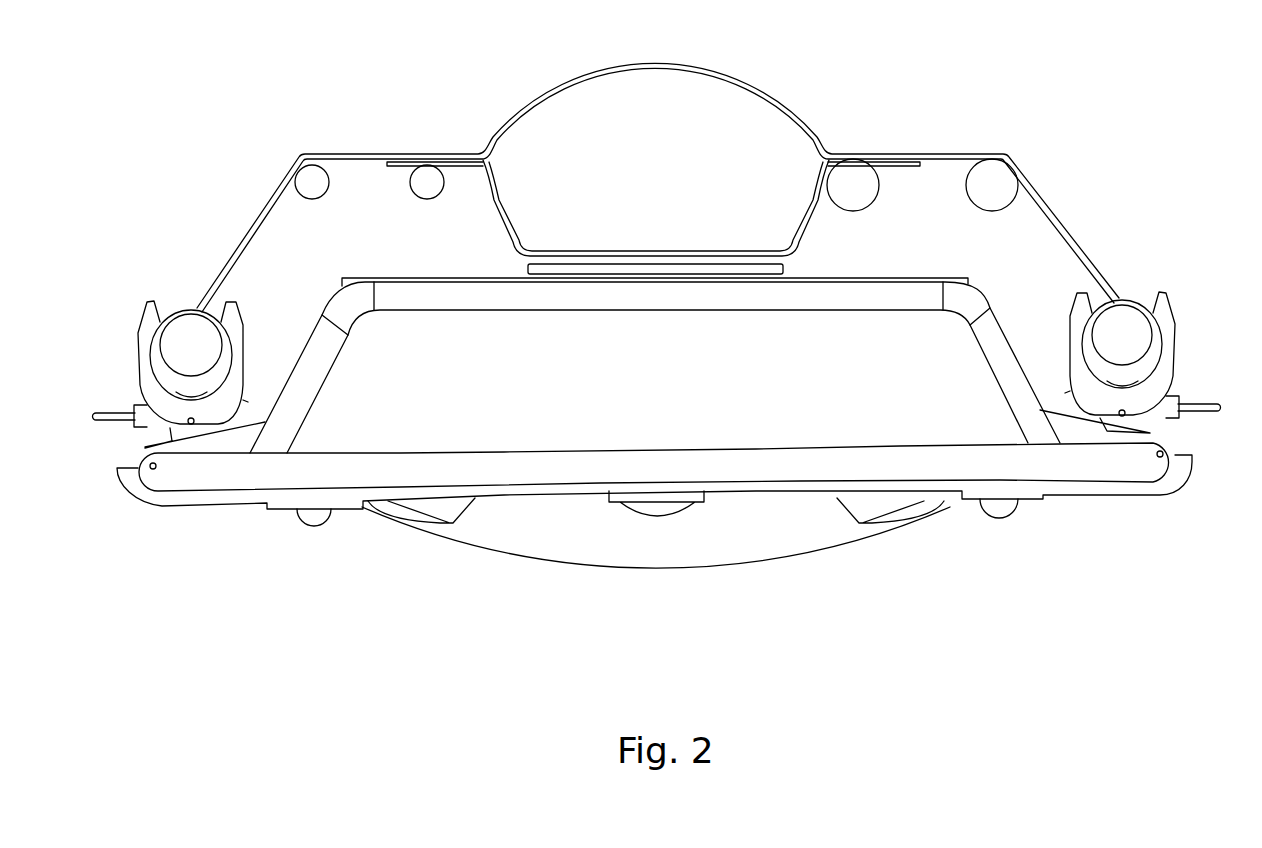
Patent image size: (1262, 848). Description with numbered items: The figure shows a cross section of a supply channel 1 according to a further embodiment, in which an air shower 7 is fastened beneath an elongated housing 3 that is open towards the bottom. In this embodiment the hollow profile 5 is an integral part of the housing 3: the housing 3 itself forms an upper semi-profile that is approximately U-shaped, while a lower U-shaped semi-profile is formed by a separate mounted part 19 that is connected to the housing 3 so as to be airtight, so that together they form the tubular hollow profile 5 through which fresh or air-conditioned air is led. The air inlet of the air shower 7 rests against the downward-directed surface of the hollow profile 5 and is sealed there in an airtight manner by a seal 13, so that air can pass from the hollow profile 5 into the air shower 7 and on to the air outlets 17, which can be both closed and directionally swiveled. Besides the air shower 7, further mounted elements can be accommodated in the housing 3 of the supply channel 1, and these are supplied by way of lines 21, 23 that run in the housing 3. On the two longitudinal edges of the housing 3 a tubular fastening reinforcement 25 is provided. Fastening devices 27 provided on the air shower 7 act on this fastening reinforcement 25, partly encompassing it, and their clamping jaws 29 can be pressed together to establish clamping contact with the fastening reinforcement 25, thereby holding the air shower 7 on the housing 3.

The supply channel 1 is at (857, 63).
The housing 3 is at (988, 150).
The hollow profile 5 is at (775, 233).
The air shower 7 is at (927, 368).
The seal 13 is at (527, 268).
The air outlets 17 is at (998, 512).
The mounted part 19 is at (810, 215).
The lines 21 is at (310, 180).
The lines 23 is at (987, 173).
The fastening reinforcement 25 is at (1122, 300).
The fastening devices 27 is at (138, 323).
The clamping jaws 29 is at (1168, 332).